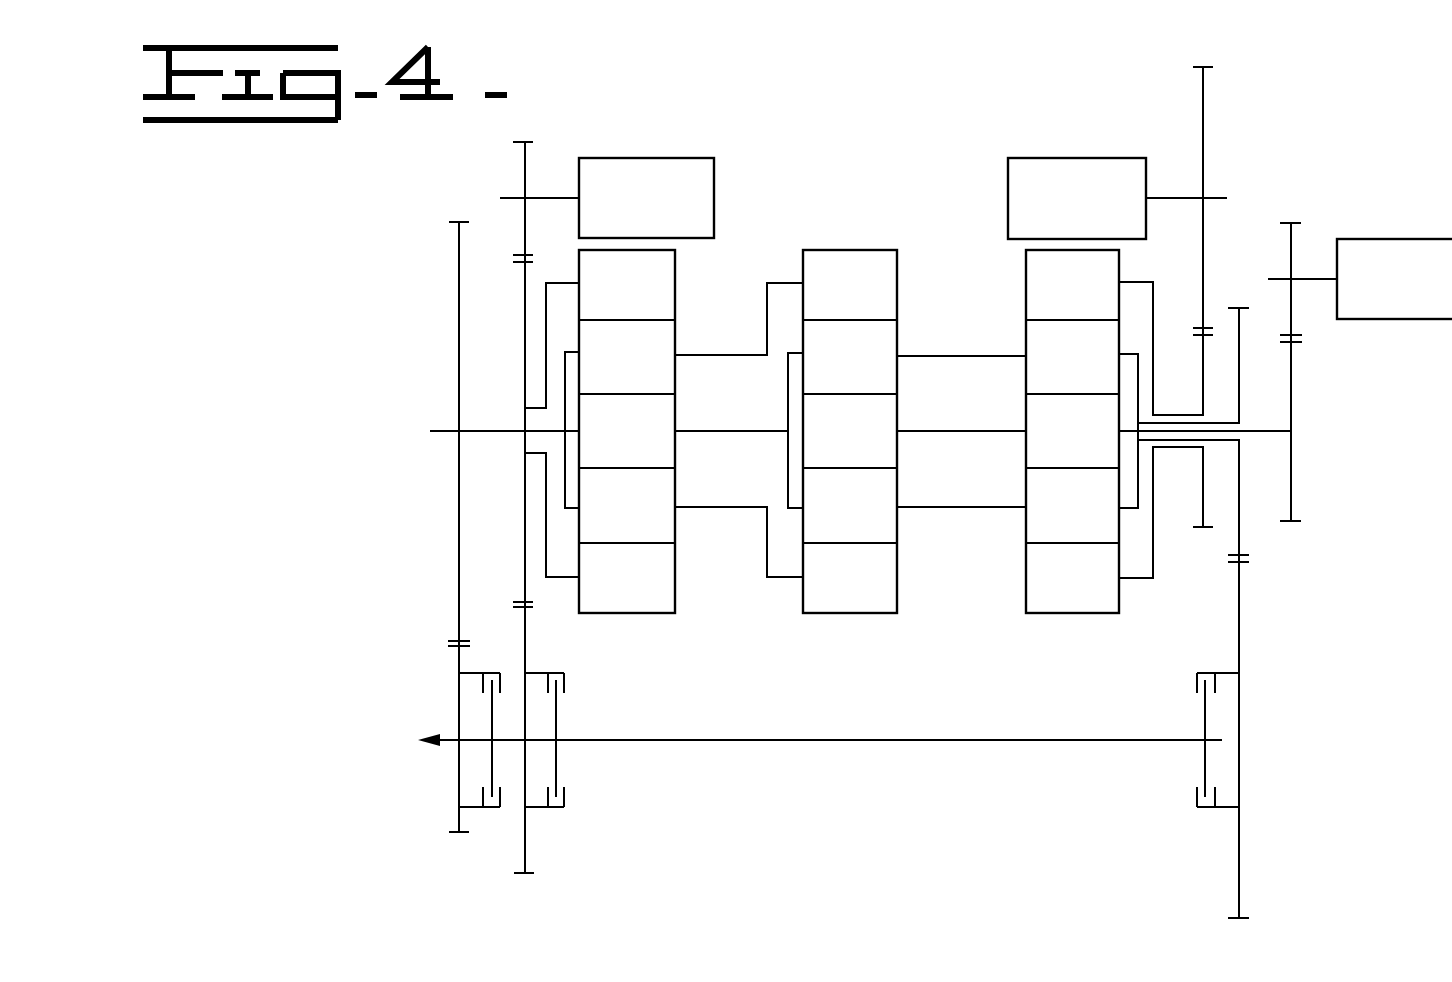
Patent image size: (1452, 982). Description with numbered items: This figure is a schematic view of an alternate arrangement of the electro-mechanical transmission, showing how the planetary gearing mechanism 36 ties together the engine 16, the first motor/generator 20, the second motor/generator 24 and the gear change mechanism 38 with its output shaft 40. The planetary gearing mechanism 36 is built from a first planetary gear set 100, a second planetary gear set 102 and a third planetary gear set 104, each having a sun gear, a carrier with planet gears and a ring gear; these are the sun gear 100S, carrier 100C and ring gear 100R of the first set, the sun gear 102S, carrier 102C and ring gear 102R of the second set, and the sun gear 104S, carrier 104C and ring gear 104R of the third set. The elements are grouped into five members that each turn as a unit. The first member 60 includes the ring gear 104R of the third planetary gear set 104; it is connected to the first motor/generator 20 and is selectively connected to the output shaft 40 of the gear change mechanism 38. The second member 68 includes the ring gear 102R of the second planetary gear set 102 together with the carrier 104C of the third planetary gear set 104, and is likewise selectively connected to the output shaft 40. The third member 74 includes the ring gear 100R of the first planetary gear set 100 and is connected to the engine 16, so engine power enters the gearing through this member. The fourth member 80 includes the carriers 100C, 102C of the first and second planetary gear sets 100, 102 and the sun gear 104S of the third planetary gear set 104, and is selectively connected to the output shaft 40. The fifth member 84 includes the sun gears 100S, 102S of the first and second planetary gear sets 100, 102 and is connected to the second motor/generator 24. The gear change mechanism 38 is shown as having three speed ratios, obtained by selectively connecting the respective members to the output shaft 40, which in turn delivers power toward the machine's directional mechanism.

The engine 16 is at (1063, 158).
The first motor/generator 20 is at (648, 158).
The second motor/generator 24 is at (1393, 239).
The planetary gearing mechanism 36 is at (808, 680).
The gear change mechanism 38 is at (891, 802).
The output shaft 40 is at (832, 742).
The first member 60 is at (568, 283).
The second member 68 is at (506, 431).
The third member 74 is at (1148, 282).
The fourth member 80 is at (1197, 447).
The fifth member 84 is at (1283, 433).
The first planetary gear set 100 is at (1084, 650).
The sun gear 100S is at (1023, 443).
The carrier 100C is at (1022, 521).
The ring gear 100R is at (1122, 608).
The second planetary gear set 102 is at (866, 650).
The sun gear 102S is at (898, 416).
The carrier 102C is at (898, 338).
The ring gear 102R is at (898, 603).
The third planetary gear set 104 is at (648, 645).
The sun gear 104S is at (676, 411).
The carrier 104C is at (676, 486).
The ring gear 104R is at (676, 611).